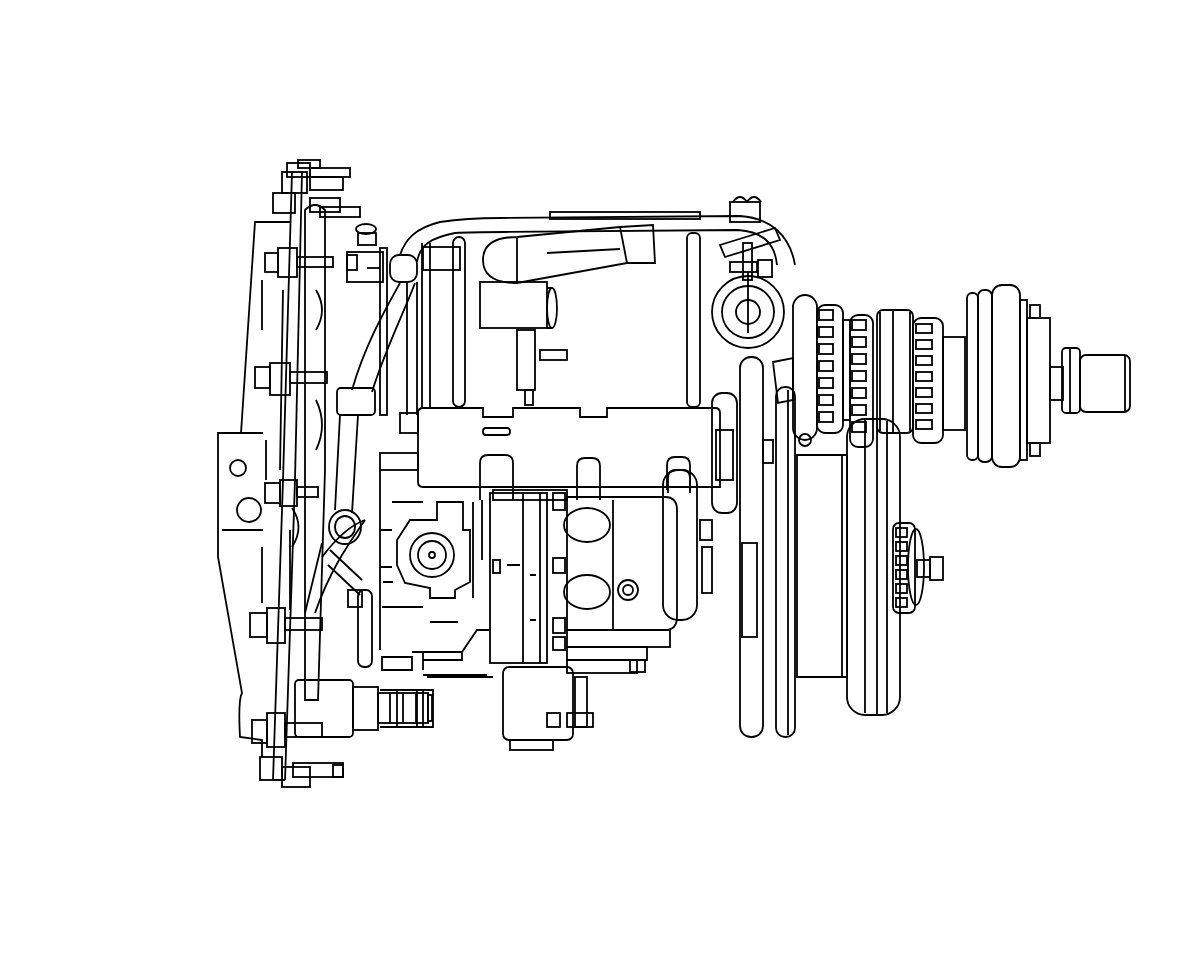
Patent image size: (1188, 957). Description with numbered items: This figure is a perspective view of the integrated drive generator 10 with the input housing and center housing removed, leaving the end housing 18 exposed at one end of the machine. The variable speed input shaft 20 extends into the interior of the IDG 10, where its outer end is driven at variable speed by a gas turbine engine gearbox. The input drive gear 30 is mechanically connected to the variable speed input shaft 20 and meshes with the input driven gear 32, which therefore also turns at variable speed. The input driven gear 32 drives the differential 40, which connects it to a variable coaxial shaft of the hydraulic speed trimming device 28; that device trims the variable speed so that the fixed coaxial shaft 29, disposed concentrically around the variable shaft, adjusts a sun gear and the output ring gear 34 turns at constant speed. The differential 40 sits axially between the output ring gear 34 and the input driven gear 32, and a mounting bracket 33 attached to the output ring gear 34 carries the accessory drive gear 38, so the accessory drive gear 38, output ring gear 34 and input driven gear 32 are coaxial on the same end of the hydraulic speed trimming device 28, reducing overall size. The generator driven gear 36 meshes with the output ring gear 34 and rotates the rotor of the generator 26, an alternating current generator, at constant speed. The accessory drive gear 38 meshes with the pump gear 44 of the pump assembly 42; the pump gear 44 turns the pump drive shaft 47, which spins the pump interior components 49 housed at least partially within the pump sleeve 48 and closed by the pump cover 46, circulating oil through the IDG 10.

The integrated drive generator 10 is at (203, 115).
The end housing 18 is at (250, 410).
The variable speed input shaft 20 is at (1105, 363).
The generator 26 is at (667, 245).
The hydraulic speed trimming device 28 is at (680, 615).
The fixed coaxial shaft 29 is at (703, 595).
The input drive gear 30 is at (890, 320).
The input driven gear 32 is at (877, 468).
The mounting bracket 33 is at (770, 650).
The output ring gear 34 is at (790, 737).
The generator driven gear 36 is at (802, 307).
The accessory drive gear 38 is at (748, 655).
The differential 40 is at (848, 512).
The pump assembly 42 is at (547, 448).
The pump gear 44 is at (743, 373).
The pump cover 46 is at (712, 412).
The pump drive shaft 47 is at (730, 458).
The pump sleeve 48 is at (632, 430).
The pump interior components 49 is at (590, 413).